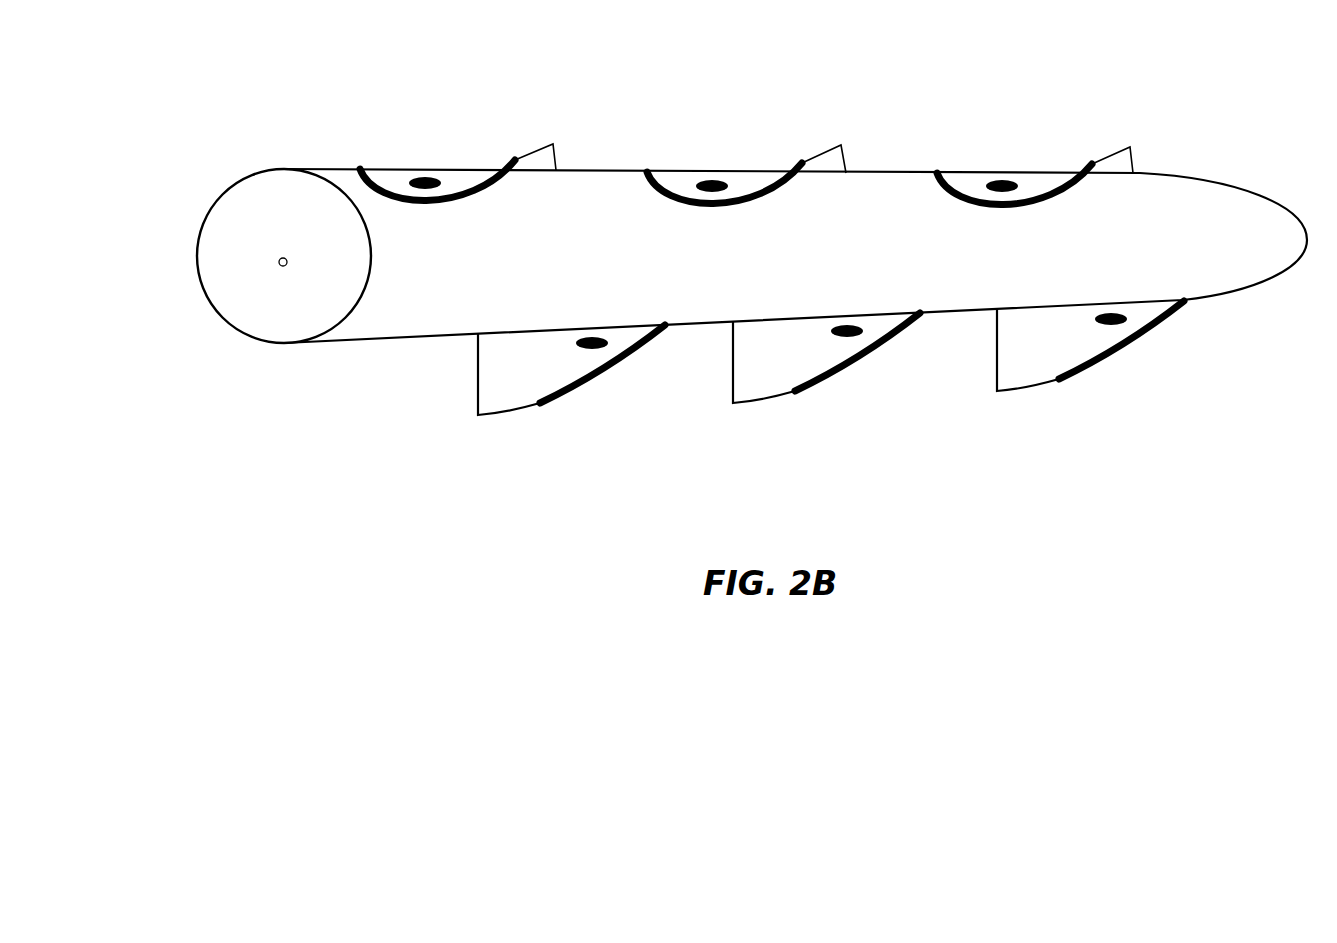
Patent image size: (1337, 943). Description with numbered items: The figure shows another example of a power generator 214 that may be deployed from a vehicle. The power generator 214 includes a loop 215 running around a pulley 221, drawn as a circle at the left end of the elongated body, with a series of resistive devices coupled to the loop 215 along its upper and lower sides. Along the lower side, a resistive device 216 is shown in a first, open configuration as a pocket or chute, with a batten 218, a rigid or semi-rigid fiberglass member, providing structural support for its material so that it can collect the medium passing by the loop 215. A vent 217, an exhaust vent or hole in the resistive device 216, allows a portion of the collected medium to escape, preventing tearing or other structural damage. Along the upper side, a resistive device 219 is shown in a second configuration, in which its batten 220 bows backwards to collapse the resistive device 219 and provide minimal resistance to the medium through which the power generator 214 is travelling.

The power generator 214 is at (795, 330).
The loop 215 is at (605, 172).
The resistive device 216 is at (480, 416).
The vent 217 is at (592, 352).
The batten 218 is at (562, 395).
The resistive device 219 is at (833, 145).
The batten 220 is at (748, 193).
The pulley 221 is at (373, 263).